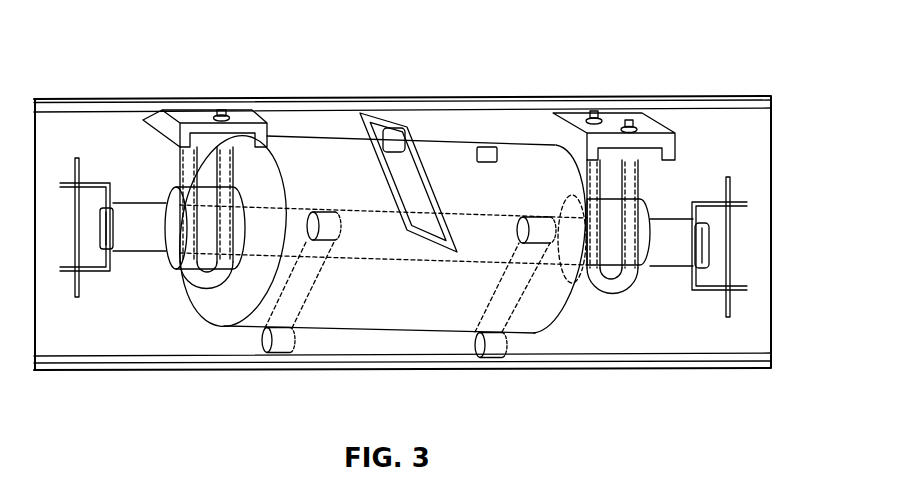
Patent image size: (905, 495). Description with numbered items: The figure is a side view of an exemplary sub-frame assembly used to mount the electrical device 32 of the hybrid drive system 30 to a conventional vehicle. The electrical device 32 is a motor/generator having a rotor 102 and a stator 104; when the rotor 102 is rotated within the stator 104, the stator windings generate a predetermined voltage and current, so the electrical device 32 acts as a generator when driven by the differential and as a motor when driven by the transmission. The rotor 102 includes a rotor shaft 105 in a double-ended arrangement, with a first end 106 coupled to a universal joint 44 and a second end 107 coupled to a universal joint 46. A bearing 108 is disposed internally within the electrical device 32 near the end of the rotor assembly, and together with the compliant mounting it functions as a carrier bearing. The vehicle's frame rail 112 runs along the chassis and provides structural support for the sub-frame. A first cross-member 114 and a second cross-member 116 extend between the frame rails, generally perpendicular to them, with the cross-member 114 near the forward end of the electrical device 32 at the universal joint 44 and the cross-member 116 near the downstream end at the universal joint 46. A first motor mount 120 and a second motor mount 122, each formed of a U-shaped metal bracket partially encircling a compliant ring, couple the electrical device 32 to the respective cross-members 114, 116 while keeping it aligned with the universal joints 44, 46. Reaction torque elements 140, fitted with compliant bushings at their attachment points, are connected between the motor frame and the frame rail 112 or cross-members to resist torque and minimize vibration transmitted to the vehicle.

The hybrid drive system 30 is at (318, 138).
The electrical device 32 is at (573, 313).
The universal joint 44 is at (73, 271).
The universal joint 46 is at (733, 297).
The rotor 102 is at (493, 225).
The stator 104 is at (462, 155).
The rotor shaft 105 is at (150, 200).
The first end 106 is at (147, 255).
The second end 107 is at (665, 223).
The bearing 108 is at (490, 156).
The second frame rail 112 is at (97, 106).
The first cross-member 114 is at (146, 118).
The second cross-member 116 is at (568, 145).
The first motor mount 120 is at (205, 113).
The second motor mount 122 is at (618, 115).
The reaction torque elements 140 is at (425, 157).